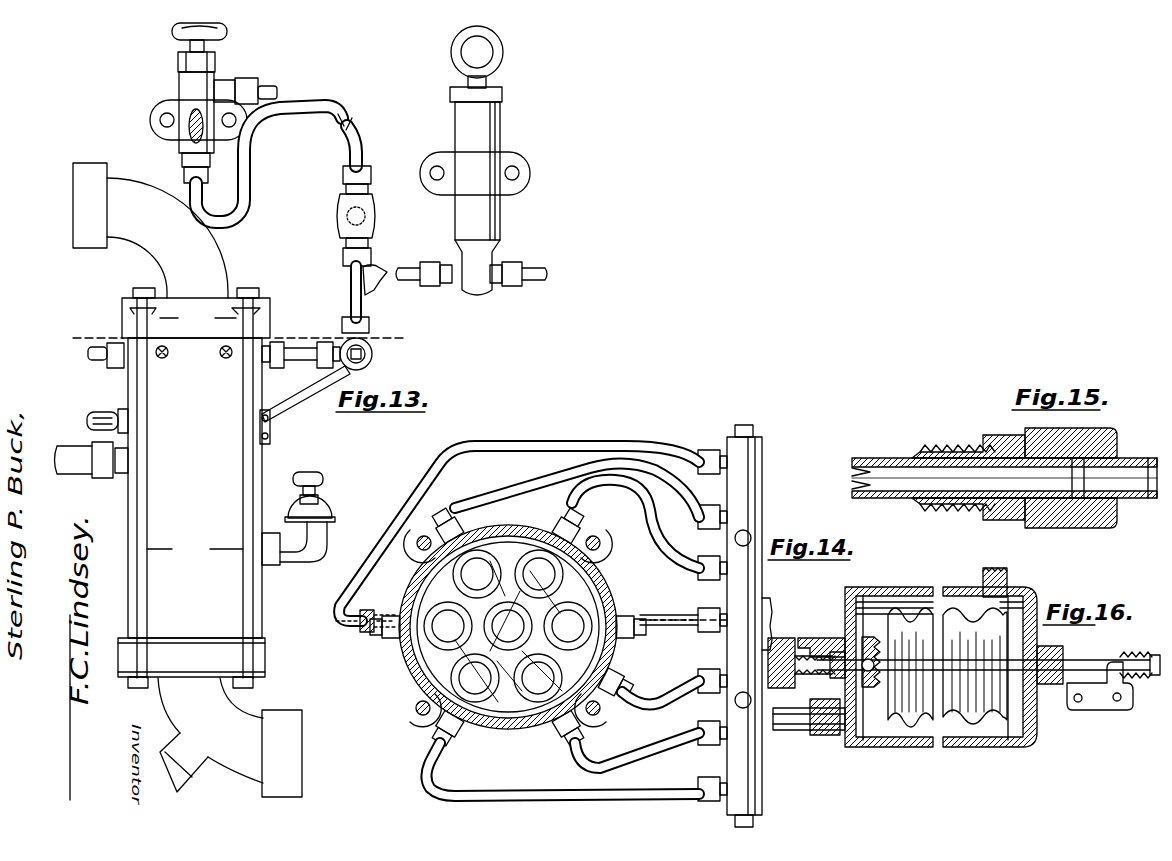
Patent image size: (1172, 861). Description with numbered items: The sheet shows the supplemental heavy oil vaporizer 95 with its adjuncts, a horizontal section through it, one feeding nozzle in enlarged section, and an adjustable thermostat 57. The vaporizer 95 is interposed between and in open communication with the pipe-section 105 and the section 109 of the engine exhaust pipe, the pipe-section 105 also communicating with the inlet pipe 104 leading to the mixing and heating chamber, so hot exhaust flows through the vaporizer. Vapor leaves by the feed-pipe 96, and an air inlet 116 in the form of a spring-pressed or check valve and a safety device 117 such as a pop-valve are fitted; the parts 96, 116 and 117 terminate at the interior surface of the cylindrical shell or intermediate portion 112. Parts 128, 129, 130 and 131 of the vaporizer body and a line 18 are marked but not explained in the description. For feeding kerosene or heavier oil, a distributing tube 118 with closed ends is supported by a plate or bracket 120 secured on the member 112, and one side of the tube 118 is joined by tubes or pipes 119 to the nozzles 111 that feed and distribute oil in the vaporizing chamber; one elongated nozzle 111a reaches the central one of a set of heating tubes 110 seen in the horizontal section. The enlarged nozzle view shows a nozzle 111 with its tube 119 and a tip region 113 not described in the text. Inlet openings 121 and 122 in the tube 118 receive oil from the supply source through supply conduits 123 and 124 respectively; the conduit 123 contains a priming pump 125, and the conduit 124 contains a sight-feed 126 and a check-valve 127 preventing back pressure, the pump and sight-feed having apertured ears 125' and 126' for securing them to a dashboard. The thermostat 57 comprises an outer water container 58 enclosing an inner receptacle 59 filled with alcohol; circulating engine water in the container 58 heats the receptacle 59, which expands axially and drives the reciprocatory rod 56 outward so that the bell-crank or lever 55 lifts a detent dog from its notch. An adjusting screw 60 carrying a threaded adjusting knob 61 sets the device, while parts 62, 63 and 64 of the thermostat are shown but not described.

In FIG. 13, the sight-feed 126 is at (202, 103).
In FIG. 13, the apertured ears 126' is at (172, 120).
In FIG. 13, the supply conduit 124 is at (346, 122).
In FIG. 13, the check-valve 127 is at (340, 214).
In FIG. 13, the priming pump 125 is at (441, 160).
In FIG. 13, the apertured ears 125' is at (457, 173).
In FIG. 13, the supply conduit 123 is at (525, 285).
In FIG. 13, the exhaust pipe section 109 is at (150, 230).
In FIG. 13, the head plate 129 is at (128, 309).
In FIG. 13, the head plate 130 is at (240, 667).
In FIG. 13, the tie rods 128 is at (130, 335).
In FIG. 13, the line 18 is at (235, 339).
In FIG. 13, the tubes or pipes 119 is at (95, 356).
In FIG. 14, the tubes or pipes 119 is at (632, 513).
In FIG. 15, the tubes or pipes 119 is at (1148, 445).
In FIG. 13, the distributing tube 118 is at (373, 357).
In FIG. 14, the distributing tube 118 is at (762, 506).
In FIG. 13, the plate or bracket 120 is at (288, 407).
In FIG. 14, the plate or bracket 120 is at (688, 612).
In FIG. 13, the safety device 117 is at (91, 418).
In FIG. 13, the feed-pipe 96 is at (85, 458).
In FIG. 14, the feed-pipe 96 is at (334, 628).
In FIG. 13, the cylindrical shell 112 is at (195, 488).
In FIG. 14, the cylindrical shell 112 is at (512, 730).
In FIG. 13, the seam 131 is at (195, 549).
In FIG. 13, the oil vaporizer 95 is at (116, 536).
In FIG. 13, the air inlet 116 is at (298, 518).
In FIG. 13, the exhaust pipe-section 105 is at (191, 715).
In FIG. 13, the inlet pipe 104 is at (196, 778).
In FIG. 14, the nozzles 111 is at (432, 575).
In FIG. 15, the nozzles 111 is at (893, 456).
In FIG. 14, the heating tubes 110 is at (475, 652).
In FIG. 14, the elongated nozzle 111a is at (636, 657).
In FIG. 14, the inlet opening 121 is at (752, 536).
In FIG. 14, the inlet opening 122 is at (734, 702).
In FIG. 15, the nozzle tip 113 is at (856, 484).
In FIG. 16, the thermostat 57 is at (924, 758).
In FIG. 16, the outer water container 58 is at (893, 598).
In FIG. 16, the inner receptacle 59 is at (950, 615).
In FIG. 16, the adjusting screw 60 is at (866, 690).
In FIG. 16, the adjusting knob 61 is at (788, 686).
In FIG. 16, the bracket 62 is at (822, 640).
In FIG. 16, the pipe 63 is at (835, 735).
In FIG. 16, the fitting 64 is at (1000, 572).
In FIG. 16, the reciprocatory rod 56 is at (1078, 662).
In FIG. 16, the bell-crank lever 55 is at (1128, 686).